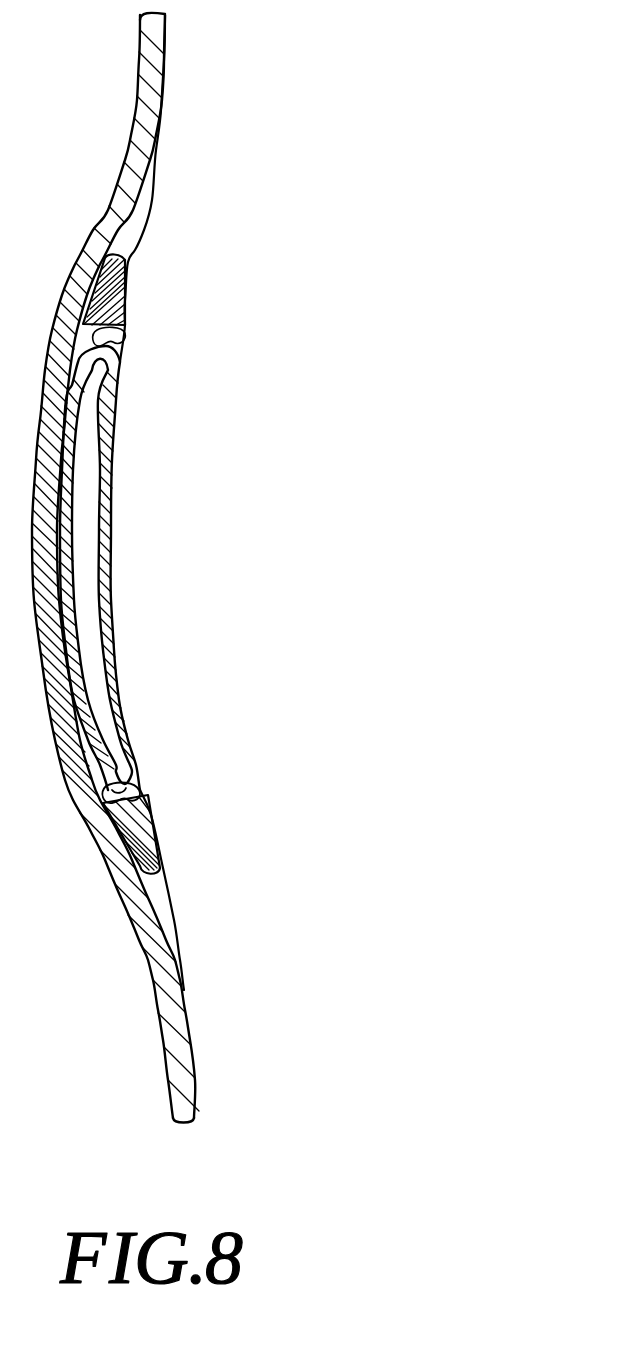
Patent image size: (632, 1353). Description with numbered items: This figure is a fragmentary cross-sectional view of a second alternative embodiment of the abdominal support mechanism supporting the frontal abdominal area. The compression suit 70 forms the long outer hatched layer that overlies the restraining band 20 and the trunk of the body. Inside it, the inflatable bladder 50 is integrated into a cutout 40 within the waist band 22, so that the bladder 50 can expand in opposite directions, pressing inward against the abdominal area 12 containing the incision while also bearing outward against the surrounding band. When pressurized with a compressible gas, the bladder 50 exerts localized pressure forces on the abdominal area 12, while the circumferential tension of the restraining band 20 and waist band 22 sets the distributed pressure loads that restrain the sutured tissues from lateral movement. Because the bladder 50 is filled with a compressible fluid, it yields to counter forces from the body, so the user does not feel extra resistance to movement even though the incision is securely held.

The compression suit 70 is at (163, 62).
The restraining band 20 is at (117, 297).
The abdominal area 12 is at (112, 540).
The inflatable bladder 50 is at (103, 709).
The cutout 40 is at (132, 788).
The waist band 22 is at (140, 827).